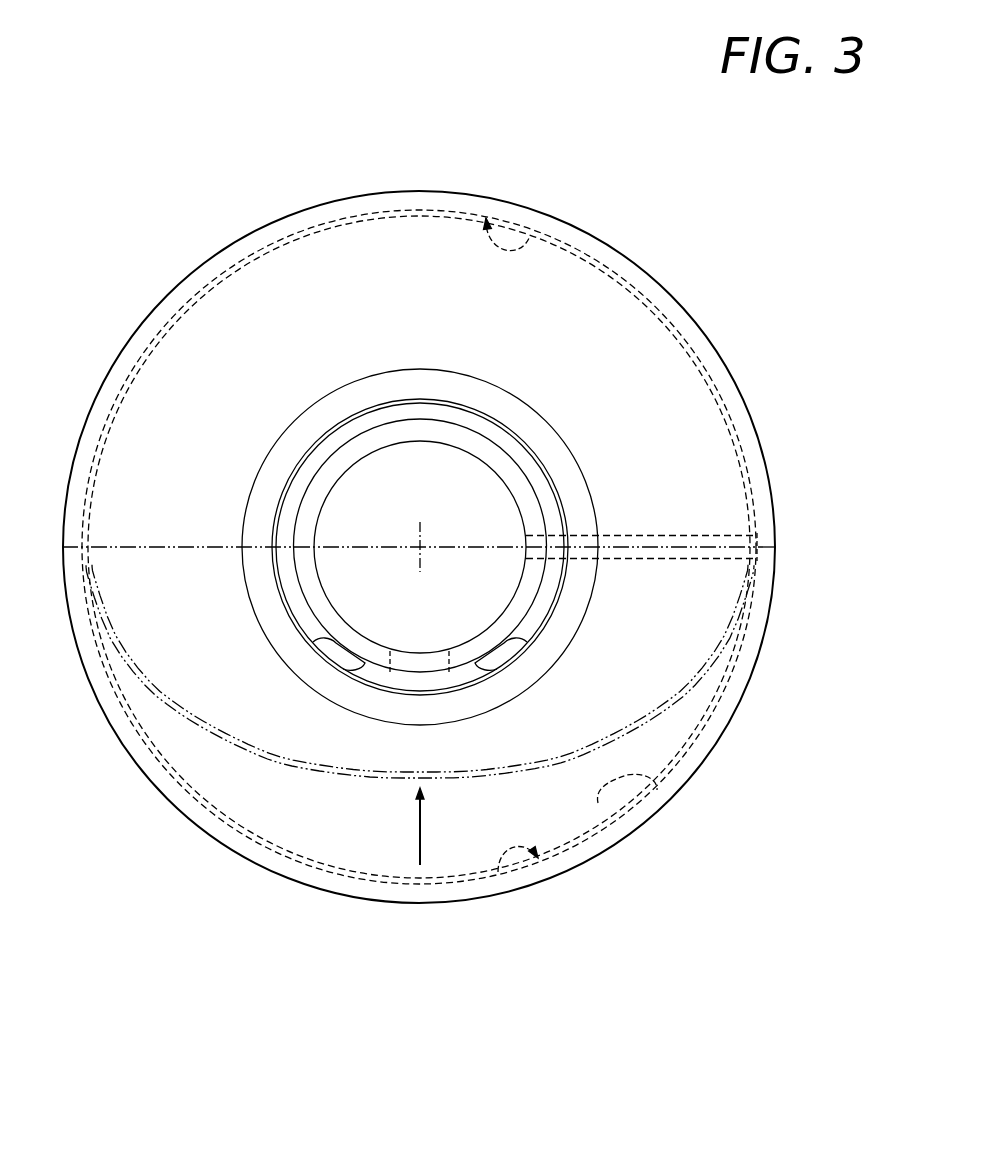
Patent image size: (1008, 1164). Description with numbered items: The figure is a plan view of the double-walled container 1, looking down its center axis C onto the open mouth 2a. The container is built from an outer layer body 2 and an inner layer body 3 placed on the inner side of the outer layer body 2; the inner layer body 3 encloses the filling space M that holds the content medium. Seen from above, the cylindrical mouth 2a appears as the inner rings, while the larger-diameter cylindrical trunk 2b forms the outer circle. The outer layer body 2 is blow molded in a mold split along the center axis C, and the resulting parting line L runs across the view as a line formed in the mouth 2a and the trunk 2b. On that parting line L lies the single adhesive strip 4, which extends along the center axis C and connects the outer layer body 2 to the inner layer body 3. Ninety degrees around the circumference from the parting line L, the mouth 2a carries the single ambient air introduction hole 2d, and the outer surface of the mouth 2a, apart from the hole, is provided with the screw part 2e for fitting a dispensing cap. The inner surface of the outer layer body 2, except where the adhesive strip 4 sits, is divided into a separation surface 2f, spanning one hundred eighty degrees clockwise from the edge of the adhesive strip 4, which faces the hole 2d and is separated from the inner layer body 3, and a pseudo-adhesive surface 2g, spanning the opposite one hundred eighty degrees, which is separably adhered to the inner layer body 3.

The double-walled container 1 is at (419, 535).
The outer layer body 2 is at (672, 284).
The mouth 2a is at (555, 630).
The trunk 2b is at (706, 352).
The ambient air introduction hole 2d is at (455, 652).
The screw part 2e is at (500, 435).
The separation surface 2f is at (499, 872).
The pseudo-adhesive surface 2g is at (528, 245).
The inner layer body 3 is at (340, 612).
The adhesive strip 4 is at (653, 534).
The parting line L is at (661, 560).
The center axis C is at (414, 540).
The filling space M is at (404, 508).